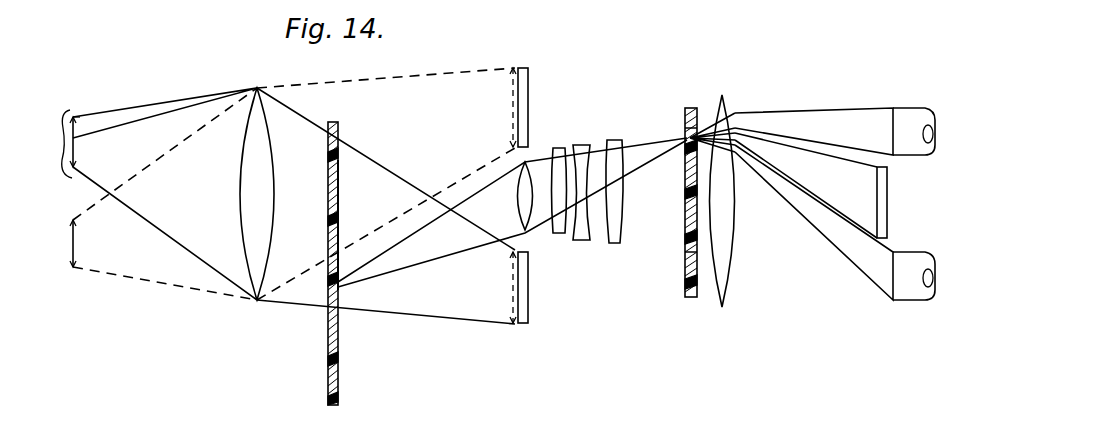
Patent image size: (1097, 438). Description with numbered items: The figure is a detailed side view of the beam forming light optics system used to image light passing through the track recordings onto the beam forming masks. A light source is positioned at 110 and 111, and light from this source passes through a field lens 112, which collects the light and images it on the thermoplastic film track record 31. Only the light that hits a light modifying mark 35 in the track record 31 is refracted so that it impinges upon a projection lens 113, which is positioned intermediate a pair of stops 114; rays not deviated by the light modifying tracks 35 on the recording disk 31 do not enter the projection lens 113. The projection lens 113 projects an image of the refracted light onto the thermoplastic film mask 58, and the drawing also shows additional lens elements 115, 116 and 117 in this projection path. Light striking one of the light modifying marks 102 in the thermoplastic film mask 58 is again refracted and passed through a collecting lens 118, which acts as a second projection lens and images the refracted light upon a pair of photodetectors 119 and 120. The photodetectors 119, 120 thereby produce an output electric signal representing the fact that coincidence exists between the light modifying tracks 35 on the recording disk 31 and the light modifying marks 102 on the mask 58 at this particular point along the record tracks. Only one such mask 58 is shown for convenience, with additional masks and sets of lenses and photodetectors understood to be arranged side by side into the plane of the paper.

The light source 110 is at (150, 105).
The light source 111 is at (76, 252).
The field lens 112 is at (257, 88).
The thermoplastic film track record 31 is at (328, 348).
The light modifying mark 35 is at (338, 162).
The stops 114 is at (529, 70).
The projection lens 113 is at (518, 202).
The lens 115 is at (560, 234).
The lens 116 is at (583, 241).
The lens 117 is at (612, 243).
The light modifying marks 102 is at (685, 137).
The thermoplastic film mask 58 is at (691, 298).
The collecting lens 118 is at (726, 300).
The photodetector 119 is at (903, 112).
The photodetector 120 is at (912, 258).